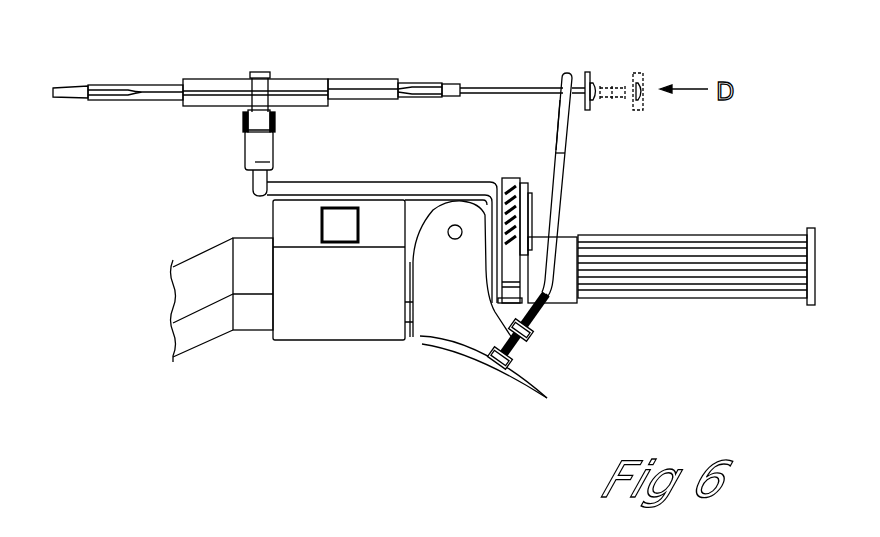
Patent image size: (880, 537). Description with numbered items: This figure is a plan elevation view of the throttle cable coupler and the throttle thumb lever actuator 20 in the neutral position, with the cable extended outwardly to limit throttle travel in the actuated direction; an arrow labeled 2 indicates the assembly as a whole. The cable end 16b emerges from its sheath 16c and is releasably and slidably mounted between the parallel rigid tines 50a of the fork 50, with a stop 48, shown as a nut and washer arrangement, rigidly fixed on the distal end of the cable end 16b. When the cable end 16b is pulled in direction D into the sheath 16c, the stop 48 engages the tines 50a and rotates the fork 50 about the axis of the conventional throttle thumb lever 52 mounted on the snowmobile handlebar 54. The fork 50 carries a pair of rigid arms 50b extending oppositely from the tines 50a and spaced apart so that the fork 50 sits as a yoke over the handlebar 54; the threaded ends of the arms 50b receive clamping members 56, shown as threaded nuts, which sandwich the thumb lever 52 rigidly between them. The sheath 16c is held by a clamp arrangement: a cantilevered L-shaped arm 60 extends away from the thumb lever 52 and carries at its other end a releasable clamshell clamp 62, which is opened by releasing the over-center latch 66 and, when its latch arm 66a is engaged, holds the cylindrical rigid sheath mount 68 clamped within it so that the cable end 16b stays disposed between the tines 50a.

The direction arrow 2 is at (607, 184).
The cable end 16b is at (538, 82).
The sheath 16c is at (453, 83).
The throttle thumb lever actuator 20 is at (670, 181).
The stop 48 is at (588, 68).
The fork 50 is at (566, 184).
The tines 50a is at (560, 122).
The arms 50b is at (543, 310).
The throttle thumb lever 52 is at (448, 348).
The handlebar 54 is at (773, 300).
The clamping members 56 is at (532, 342).
The L-shaped arm 60 is at (340, 177).
The clamshell clamp 62 is at (207, 76).
The over-center latch 66 is at (253, 150).
The latch arm 66a is at (266, 72).
The sheath mount 68 is at (367, 80).